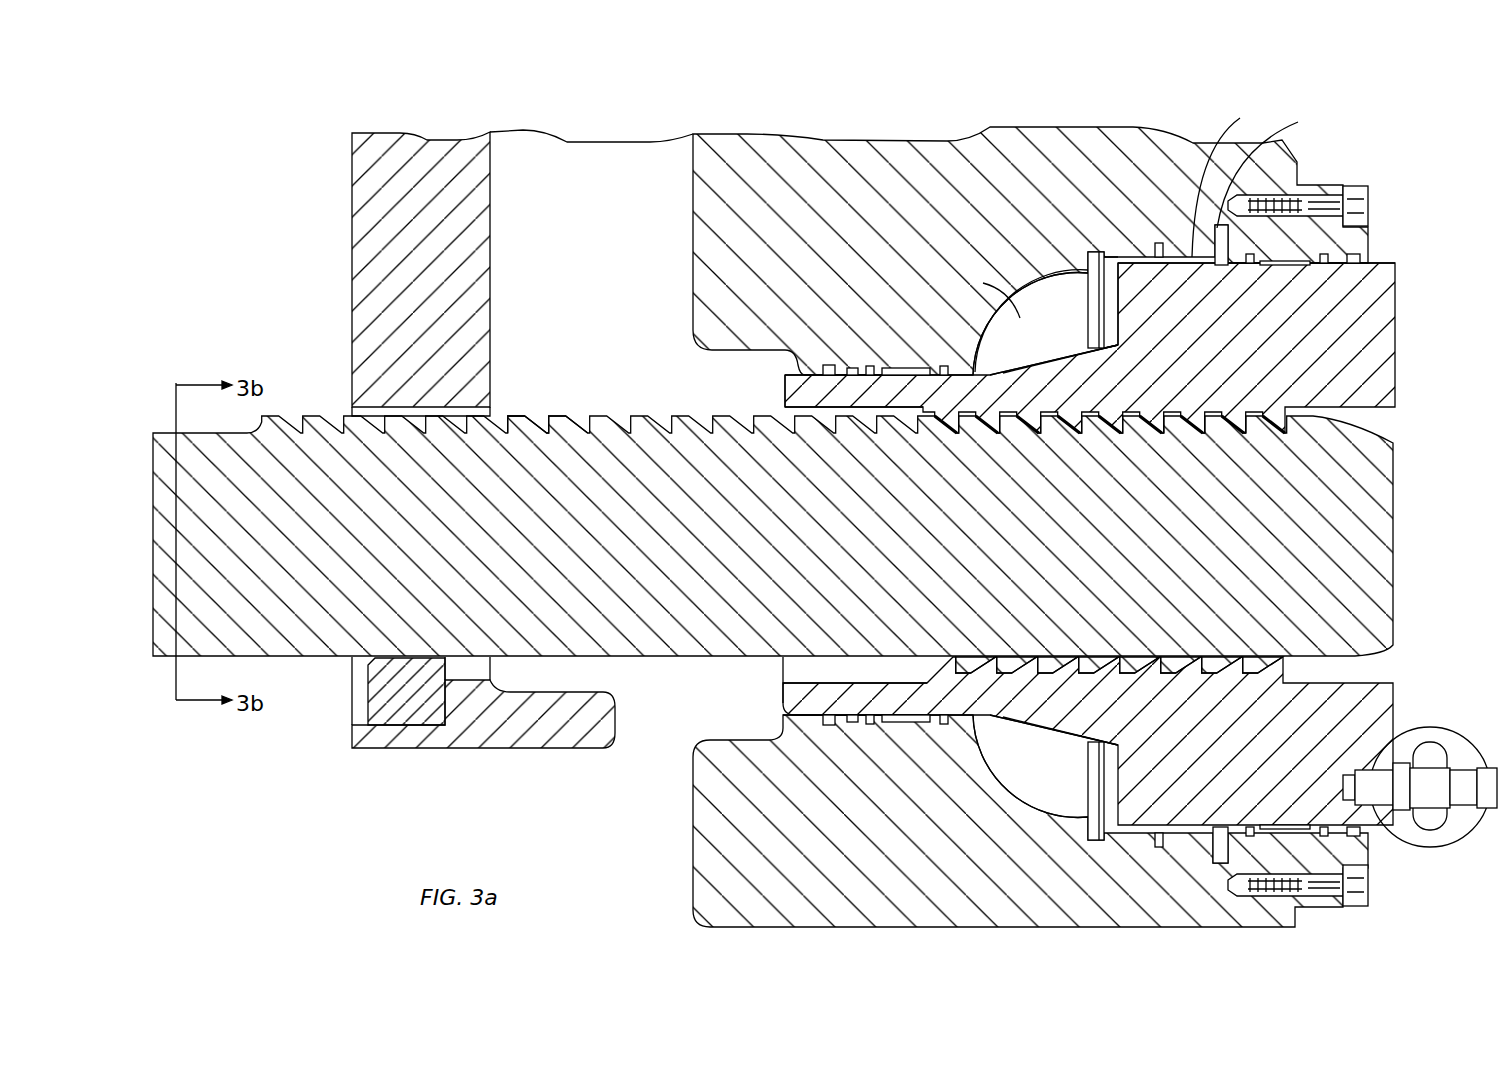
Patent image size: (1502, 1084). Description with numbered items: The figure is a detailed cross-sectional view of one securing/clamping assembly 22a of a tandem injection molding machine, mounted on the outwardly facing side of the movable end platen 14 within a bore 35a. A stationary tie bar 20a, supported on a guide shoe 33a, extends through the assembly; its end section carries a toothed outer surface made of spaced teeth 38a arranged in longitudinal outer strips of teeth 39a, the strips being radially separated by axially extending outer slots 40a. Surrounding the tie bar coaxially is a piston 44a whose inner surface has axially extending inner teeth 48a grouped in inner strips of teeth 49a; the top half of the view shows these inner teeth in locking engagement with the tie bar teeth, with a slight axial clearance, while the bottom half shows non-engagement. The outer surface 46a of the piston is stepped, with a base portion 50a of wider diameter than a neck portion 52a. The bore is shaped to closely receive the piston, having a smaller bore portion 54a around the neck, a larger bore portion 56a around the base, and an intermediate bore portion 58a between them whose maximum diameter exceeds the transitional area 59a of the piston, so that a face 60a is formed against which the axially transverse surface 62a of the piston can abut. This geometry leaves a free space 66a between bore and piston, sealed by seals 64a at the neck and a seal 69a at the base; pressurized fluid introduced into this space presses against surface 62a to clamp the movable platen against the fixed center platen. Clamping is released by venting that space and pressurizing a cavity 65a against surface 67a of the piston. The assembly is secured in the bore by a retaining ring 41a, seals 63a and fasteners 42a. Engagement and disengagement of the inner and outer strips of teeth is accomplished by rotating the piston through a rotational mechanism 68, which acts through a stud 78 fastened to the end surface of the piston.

The movable end platen 14 is at (577, 742).
The tie bar 20a is at (1378, 508).
The securing/clamping assembly 22a is at (1375, 263).
The guide shoe 33a is at (415, 716).
The bore 35a is at (825, 726).
The teeth 38a is at (525, 418).
The outer strips of teeth 39a is at (519, 414).
The outer slots 40a is at (316, 660).
The retaining ring 41a is at (1368, 850).
The fasteners 42a is at (1370, 193).
The piston 44a is at (1385, 378).
The outer surface 46a is at (1160, 243).
The inner teeth 48a is at (1112, 433).
The inner strips of teeth 49a is at (1200, 434).
The base portion 50a is at (1340, 326).
The neck portion 52a is at (905, 375).
The smaller bore portion 54a is at (828, 378).
The larger bore portion 56a is at (1112, 261).
The intermediate bore portion 58a is at (1048, 283).
The transitional area 59a is at (1050, 372).
The face 60a is at (1093, 253).
The axially transverse surface 62a is at (1120, 332).
The seals 63a is at (1322, 830).
The seals 64a is at (942, 377).
The cavity 65a is at (1278, 167).
The free space 66a is at (1102, 207).
The surface 67a is at (1203, 255).
The rotational mechanism 68 is at (1452, 835).
The seal 69a is at (1182, 285).
The stud 78 is at (1490, 775).